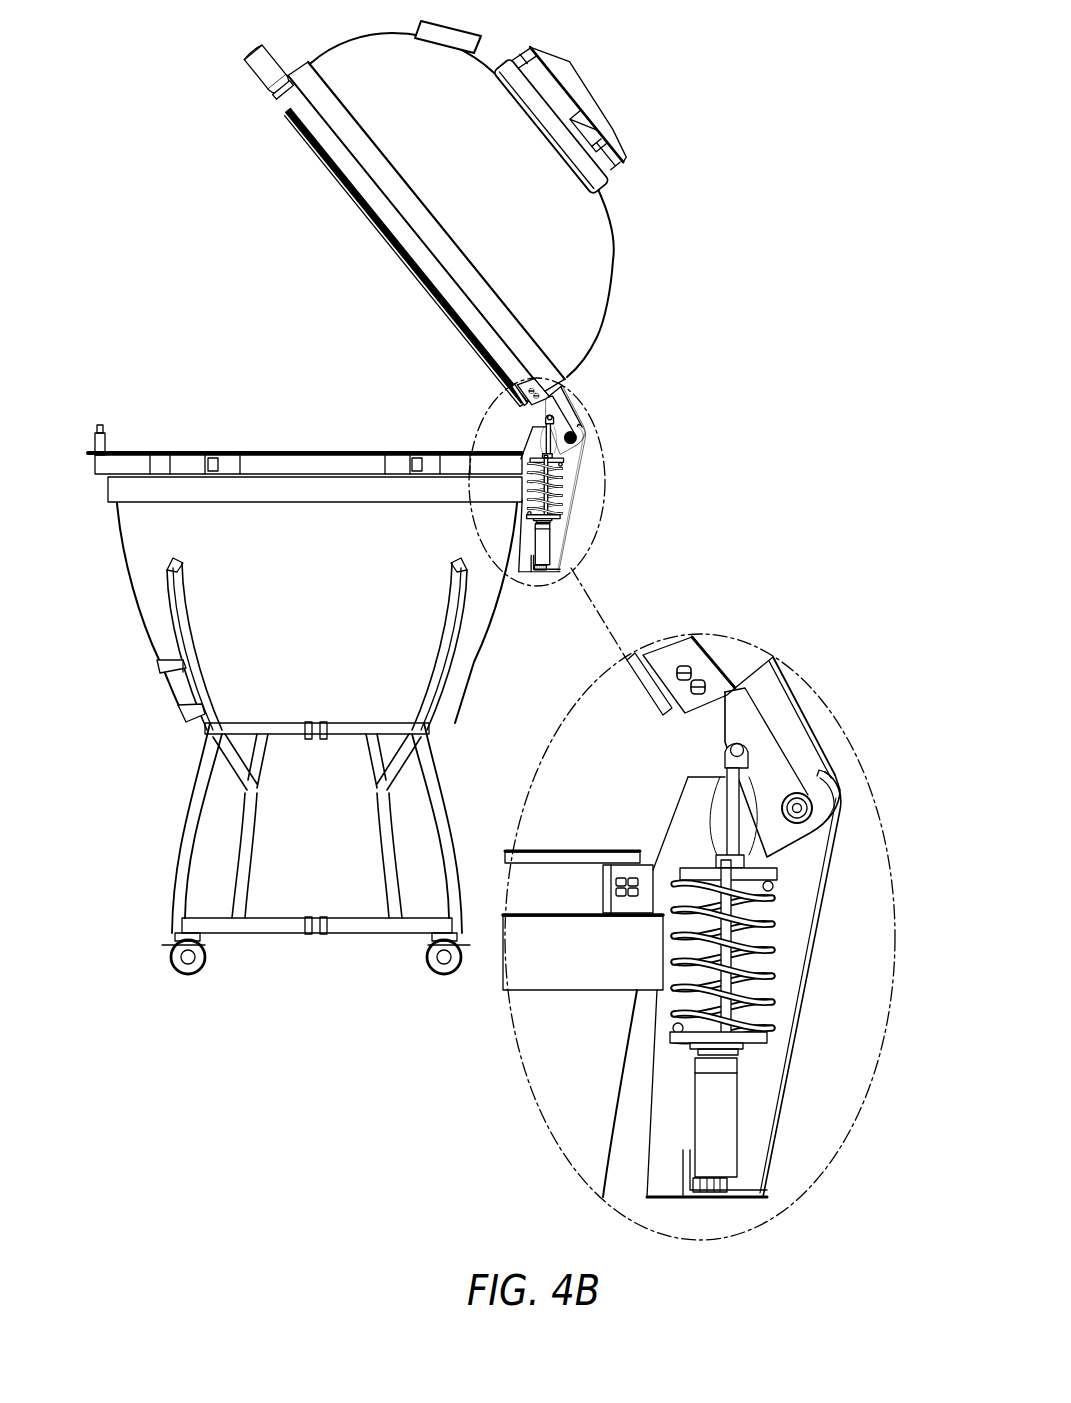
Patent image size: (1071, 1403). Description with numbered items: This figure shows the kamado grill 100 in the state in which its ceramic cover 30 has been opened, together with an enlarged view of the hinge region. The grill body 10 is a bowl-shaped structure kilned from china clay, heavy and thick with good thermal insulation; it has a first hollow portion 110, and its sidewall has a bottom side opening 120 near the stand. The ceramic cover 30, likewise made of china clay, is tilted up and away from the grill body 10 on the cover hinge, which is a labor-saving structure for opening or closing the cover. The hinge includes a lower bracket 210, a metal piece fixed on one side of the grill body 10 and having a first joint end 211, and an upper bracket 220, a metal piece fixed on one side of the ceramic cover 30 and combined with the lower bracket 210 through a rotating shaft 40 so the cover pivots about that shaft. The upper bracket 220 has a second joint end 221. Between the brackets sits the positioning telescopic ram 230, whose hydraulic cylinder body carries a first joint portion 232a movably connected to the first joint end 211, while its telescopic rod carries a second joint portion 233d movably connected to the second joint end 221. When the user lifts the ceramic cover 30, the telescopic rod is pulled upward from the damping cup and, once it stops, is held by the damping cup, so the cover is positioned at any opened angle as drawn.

The kamado grill 100 is at (707, 21).
The grill body 10 is at (130, 548).
The ceramic cover 30 is at (594, 243).
The rotating shaft 40 is at (583, 440).
The first hollow portion 110 is at (270, 434).
The bottom side opening 120 is at (176, 690).
The lower bracket 210 is at (577, 482).
The first joint end 211 is at (722, 1200).
The upper bracket 220 is at (563, 417).
The second joint end 221 is at (748, 725).
The positioning telescopic ram 230 is at (557, 513).
The first joint portion 232a is at (730, 1182).
The second joint portion 233d is at (748, 750).